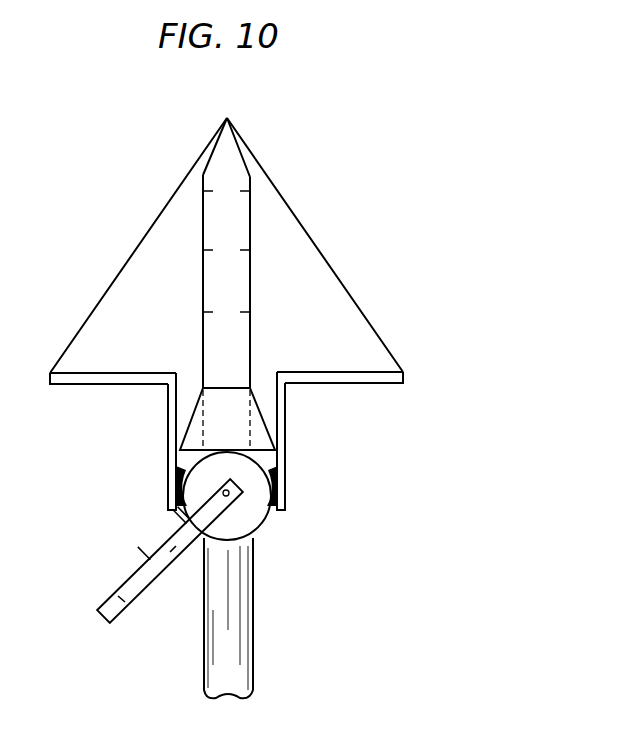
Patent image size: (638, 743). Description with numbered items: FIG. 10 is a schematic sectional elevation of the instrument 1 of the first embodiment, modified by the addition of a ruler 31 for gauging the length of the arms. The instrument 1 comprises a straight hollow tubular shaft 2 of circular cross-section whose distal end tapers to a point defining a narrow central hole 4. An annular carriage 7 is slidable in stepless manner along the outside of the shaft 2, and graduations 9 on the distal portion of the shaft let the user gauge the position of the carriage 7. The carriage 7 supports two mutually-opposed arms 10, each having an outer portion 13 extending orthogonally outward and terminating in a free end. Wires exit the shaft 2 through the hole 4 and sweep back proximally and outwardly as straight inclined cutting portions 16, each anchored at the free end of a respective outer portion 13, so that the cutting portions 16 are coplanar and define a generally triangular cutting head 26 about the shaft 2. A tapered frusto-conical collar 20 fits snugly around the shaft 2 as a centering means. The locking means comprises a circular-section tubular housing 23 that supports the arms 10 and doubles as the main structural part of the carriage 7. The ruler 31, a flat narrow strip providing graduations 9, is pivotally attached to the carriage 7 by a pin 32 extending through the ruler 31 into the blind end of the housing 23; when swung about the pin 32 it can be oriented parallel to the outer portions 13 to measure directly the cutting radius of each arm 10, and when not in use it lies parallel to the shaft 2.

The instrument 1 is at (420, 174).
The shaft 2 is at (248, 641).
The central hole 4 is at (232, 112).
The carriage 7 is at (336, 484).
The graduations 9 is at (203, 250).
The arms 10 is at (162, 388).
The outer portion 13 is at (80, 383).
The cutting portions 16 is at (123, 268).
The collar 20 is at (236, 431).
The housing 23 is at (186, 479).
The cutting head 26 is at (316, 336).
The ruler 31 is at (130, 578).
The pin 32 is at (243, 493).